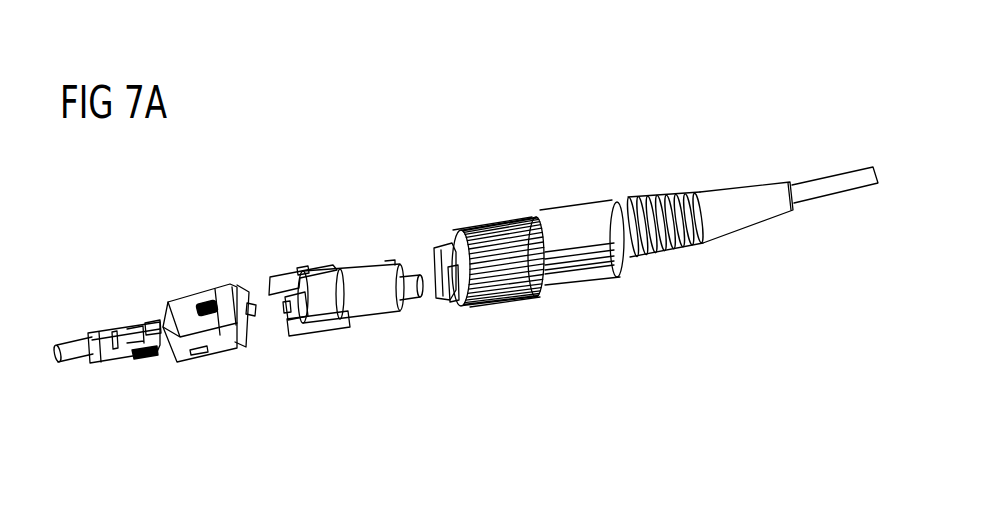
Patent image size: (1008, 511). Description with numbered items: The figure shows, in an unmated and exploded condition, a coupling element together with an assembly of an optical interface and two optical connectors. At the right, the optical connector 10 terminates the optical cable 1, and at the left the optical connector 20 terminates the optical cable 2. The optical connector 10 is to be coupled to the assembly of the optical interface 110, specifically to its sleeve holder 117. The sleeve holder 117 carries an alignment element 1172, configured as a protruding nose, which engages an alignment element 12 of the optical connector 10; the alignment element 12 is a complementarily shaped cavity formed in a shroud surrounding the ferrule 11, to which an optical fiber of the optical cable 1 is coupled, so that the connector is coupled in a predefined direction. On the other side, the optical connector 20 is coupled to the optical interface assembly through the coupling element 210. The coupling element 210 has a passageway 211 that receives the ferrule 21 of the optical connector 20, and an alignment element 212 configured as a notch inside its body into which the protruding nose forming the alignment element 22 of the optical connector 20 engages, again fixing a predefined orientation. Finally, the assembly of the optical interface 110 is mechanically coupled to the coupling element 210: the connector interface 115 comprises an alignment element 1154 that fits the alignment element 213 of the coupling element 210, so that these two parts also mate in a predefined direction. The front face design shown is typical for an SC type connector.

The optical cable 1 is at (775, 170).
The optical cable 2 is at (76, 345).
The optical connector 10 is at (525, 203).
The ferrule 11 is at (483, 271).
The alignment element 12 is at (447, 265).
The optical connector 20 is at (121, 331).
The ferrule 21 is at (155, 320).
The alignment element 22 is at (150, 360).
The assembly of the optical interface 110 is at (356, 272).
The connector interface 115 is at (300, 270).
The sleeve holder 117 is at (375, 265).
The alignment element 1154 is at (296, 300).
The alignment element 1172 is at (418, 300).
The coupling element 210 is at (224, 317).
The passageway 211 is at (242, 290).
The alignment element 212 is at (200, 353).
The alignment element 213 is at (247, 345).